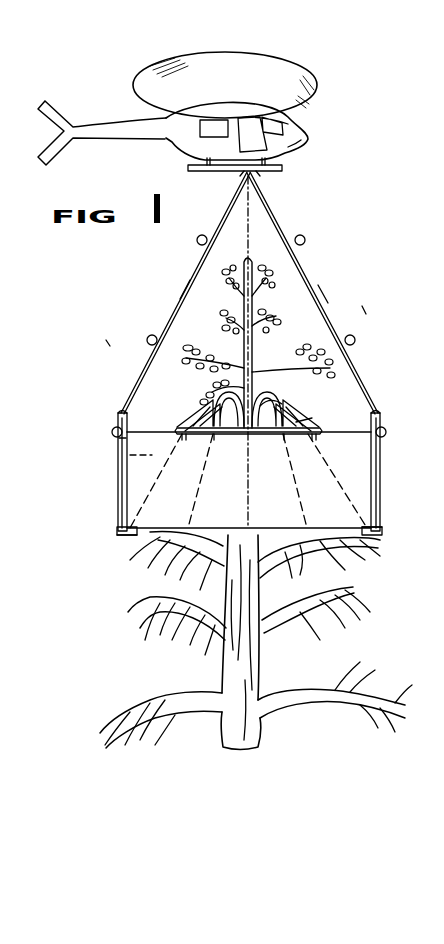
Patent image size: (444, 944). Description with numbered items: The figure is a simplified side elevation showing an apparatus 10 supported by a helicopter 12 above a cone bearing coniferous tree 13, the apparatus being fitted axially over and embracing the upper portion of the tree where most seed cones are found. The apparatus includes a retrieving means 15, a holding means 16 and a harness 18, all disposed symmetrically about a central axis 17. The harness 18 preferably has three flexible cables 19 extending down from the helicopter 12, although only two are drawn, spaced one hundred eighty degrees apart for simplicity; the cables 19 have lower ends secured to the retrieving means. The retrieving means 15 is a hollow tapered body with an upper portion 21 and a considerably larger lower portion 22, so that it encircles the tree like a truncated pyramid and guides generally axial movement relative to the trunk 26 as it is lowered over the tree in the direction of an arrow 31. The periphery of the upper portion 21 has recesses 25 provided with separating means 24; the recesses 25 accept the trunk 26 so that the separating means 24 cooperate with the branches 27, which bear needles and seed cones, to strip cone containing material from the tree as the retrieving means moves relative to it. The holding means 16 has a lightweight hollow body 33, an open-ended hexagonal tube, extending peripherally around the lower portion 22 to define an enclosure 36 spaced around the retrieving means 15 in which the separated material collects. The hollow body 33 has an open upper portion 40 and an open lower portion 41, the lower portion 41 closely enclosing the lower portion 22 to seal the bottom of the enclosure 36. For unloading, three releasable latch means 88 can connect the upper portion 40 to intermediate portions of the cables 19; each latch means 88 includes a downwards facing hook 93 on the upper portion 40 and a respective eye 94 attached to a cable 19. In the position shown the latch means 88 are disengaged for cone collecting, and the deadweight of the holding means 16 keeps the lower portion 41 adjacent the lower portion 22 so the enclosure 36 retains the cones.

The apparatus 10 is at (358, 312).
The helicopter 12 is at (303, 150).
The coniferous tree 13 is at (190, 642).
The retrieving means 15 is at (313, 417).
The holding means 16 is at (387, 428).
The central axis 17 is at (250, 500).
The harness 18 is at (318, 266).
The flexible cables 19 is at (190, 280).
The upper portion of retrieving means 21 is at (183, 425).
The lower portion of retrieving means 22 is at (380, 528).
The separating means 24 is at (248, 416).
The recesses 25 is at (270, 415).
The trunk 26 is at (260, 656).
The branches 27 is at (237, 368).
The arrow 31 is at (73, 427).
The hollow body of holding means 33 is at (116, 440).
The enclosure 36 is at (150, 455).
The upper portion of holding means 40 is at (343, 432).
The lower portion of holding means 41 is at (136, 534).
The releasable latch means 88 is at (109, 345).
The hook 93 is at (117, 410).
The eye 94 is at (147, 338).